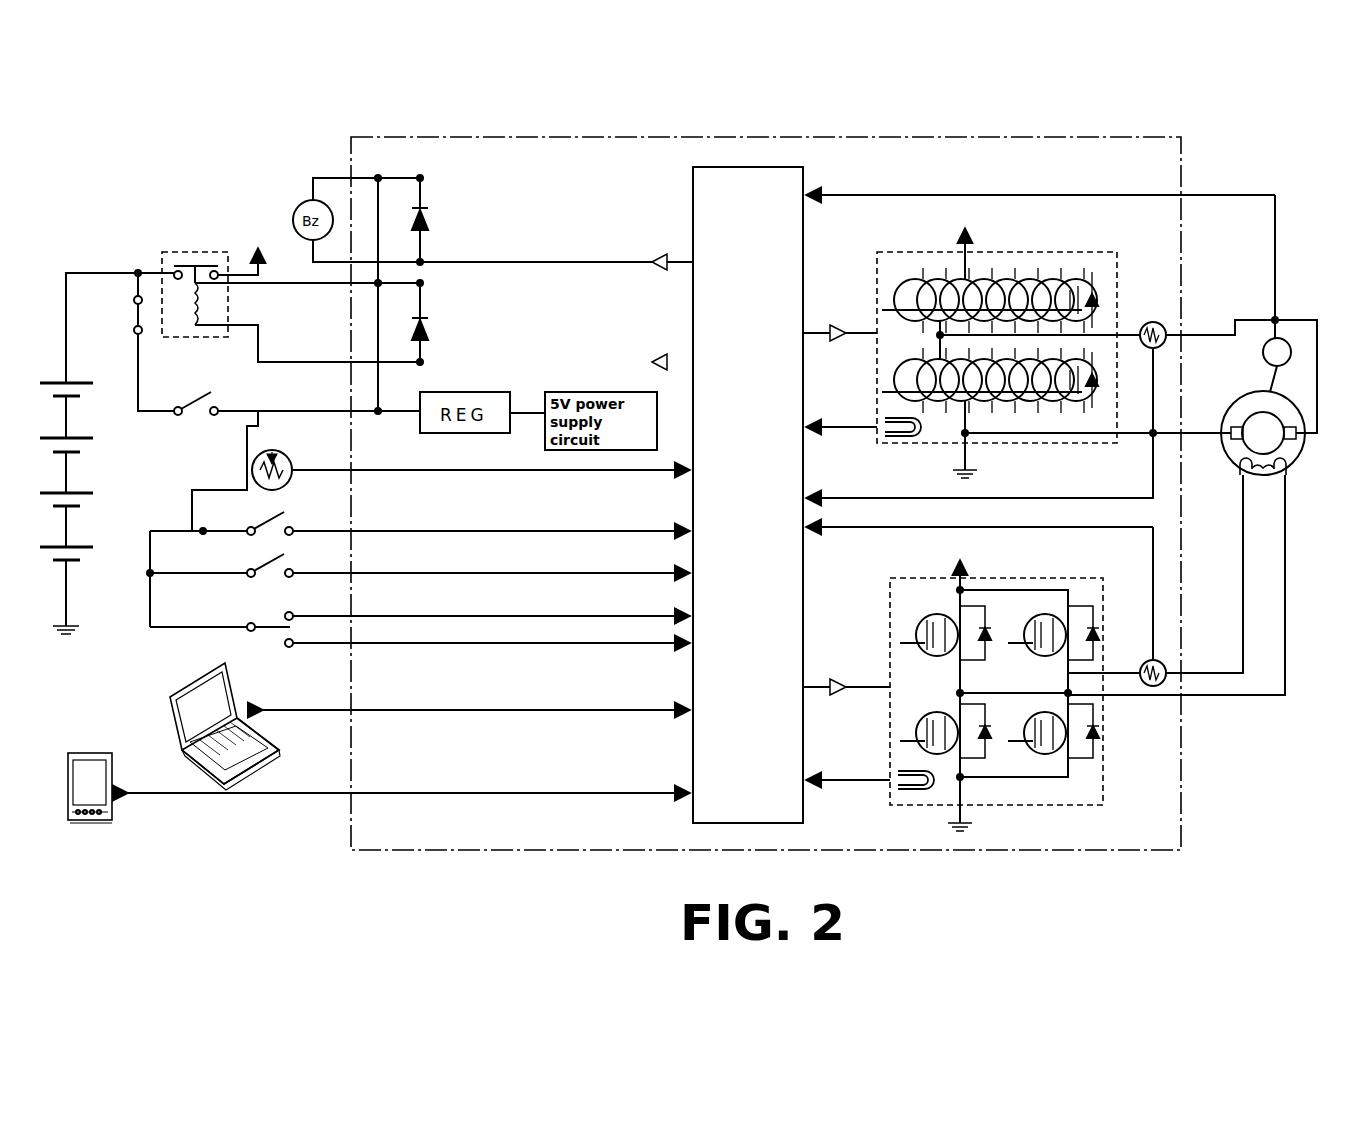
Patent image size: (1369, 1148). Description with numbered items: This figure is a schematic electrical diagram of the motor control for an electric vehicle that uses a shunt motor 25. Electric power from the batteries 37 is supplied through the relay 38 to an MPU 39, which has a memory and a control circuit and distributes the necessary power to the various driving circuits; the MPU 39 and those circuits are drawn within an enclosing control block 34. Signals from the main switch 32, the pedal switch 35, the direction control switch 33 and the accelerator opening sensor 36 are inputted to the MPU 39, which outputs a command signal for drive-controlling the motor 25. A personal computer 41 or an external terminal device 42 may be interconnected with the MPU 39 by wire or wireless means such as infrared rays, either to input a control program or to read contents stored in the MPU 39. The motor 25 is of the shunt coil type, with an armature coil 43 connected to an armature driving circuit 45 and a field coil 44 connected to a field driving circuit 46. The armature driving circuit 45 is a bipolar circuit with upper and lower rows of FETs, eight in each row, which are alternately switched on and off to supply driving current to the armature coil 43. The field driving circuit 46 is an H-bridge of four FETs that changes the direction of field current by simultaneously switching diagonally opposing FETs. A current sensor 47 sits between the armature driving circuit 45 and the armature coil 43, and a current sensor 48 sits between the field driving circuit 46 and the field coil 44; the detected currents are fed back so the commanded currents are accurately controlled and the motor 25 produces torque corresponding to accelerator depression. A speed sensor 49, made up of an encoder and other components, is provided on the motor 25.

The shunt motor 25 is at (1302, 458).
The main switch 32 is at (265, 518).
The direction control switch 33 is at (265, 630).
The controller 34 is at (428, 137).
The pedal switch 35 is at (265, 560).
The accelerator opening sensor 36 is at (275, 450).
The batteries 37 is at (82, 383).
The relay 38 is at (185, 252).
The MPU 39 is at (755, 167).
The personal computer 41 is at (170, 720).
The external terminal device 42 is at (88, 823).
The armature coil 43 is at (1298, 420).
The field coil 44 is at (1252, 460).
The armature driving circuit 45 is at (1027, 252).
The field driving circuit 46 is at (1028, 805).
The current sensor 47 is at (1165, 330).
The current sensor 48 is at (1168, 682).
The speed sensor 49 is at (1287, 343).